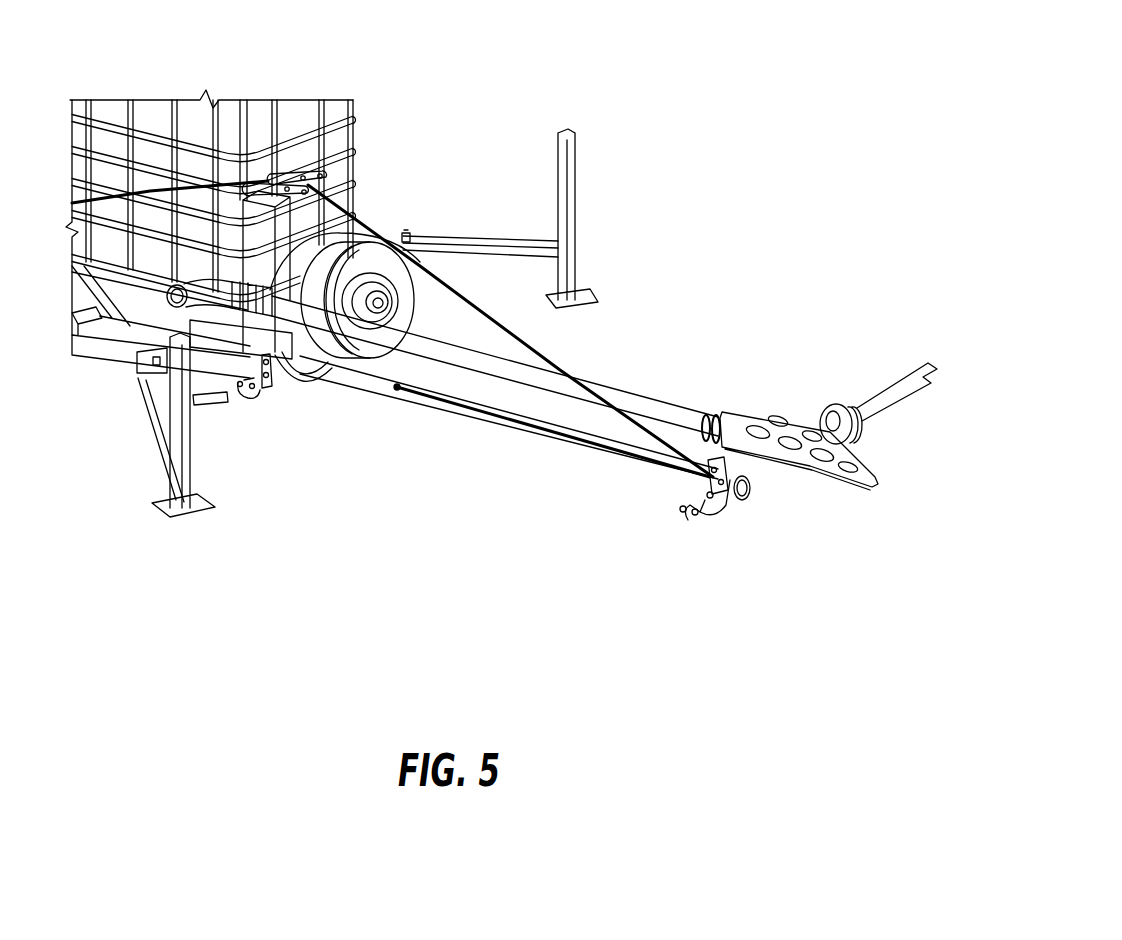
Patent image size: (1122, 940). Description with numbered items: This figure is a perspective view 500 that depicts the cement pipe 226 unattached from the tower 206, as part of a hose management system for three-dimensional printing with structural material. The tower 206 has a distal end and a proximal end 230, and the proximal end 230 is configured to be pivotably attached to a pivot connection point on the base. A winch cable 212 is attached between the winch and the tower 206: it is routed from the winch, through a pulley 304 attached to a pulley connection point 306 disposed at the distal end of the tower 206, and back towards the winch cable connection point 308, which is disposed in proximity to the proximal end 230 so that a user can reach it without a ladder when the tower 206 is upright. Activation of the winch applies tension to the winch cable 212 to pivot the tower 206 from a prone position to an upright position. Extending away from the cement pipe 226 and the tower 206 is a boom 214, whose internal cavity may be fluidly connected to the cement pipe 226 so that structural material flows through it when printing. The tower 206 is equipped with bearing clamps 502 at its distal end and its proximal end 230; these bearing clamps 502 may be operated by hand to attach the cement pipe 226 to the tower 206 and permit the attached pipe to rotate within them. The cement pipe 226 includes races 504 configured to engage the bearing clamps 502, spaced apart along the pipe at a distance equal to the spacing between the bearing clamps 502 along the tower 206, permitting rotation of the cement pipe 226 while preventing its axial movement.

The perspective view 500 is at (718, 92).
The race 504 is at (355, 222).
The winch cable 212 is at (560, 367).
The cement pipe 226 is at (643, 407).
The boom 214 is at (881, 397).
The winch cable connection point 308 is at (397, 390).
The tower 206 is at (503, 423).
The pulley 304 is at (702, 482).
The pulley connection point 306 is at (740, 466).
The bearing clamp 502 is at (263, 402).
The proximal end 230 is at (325, 400).